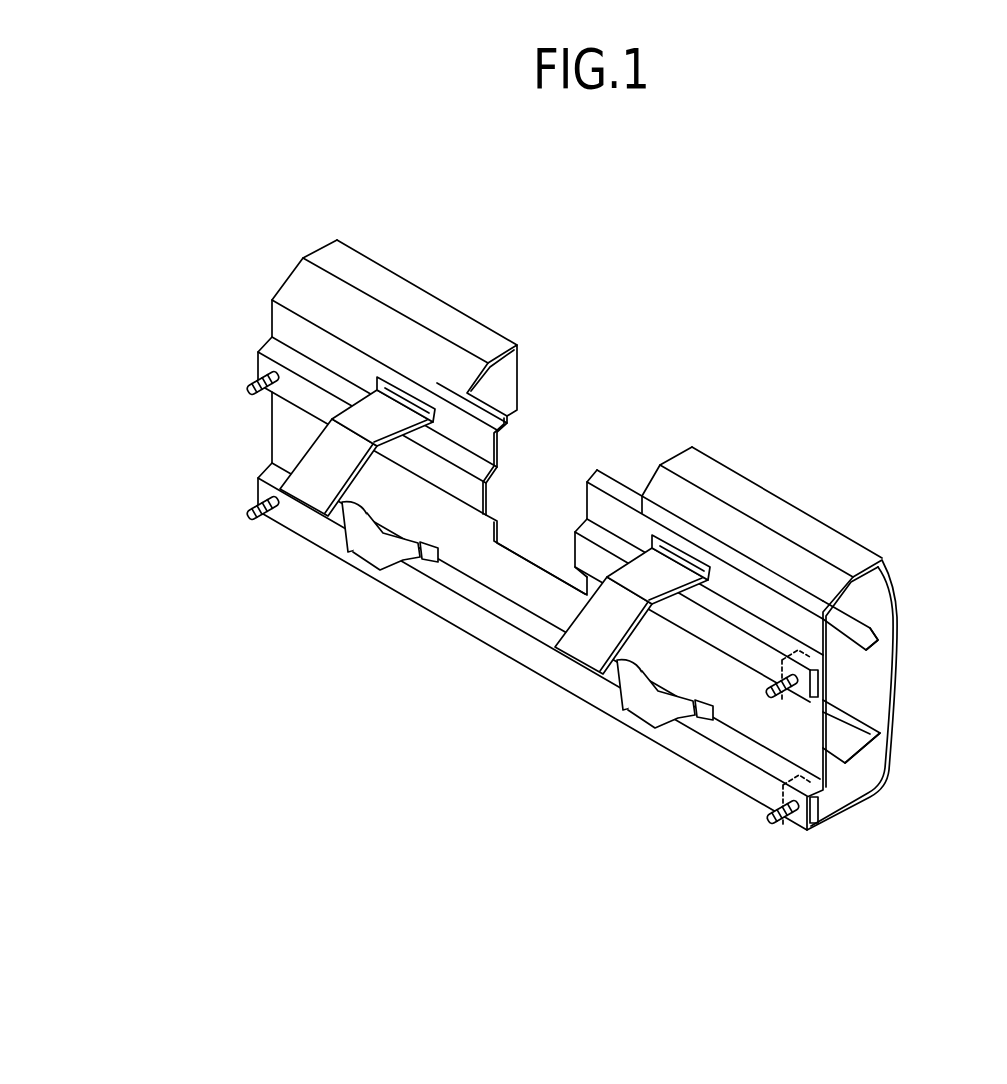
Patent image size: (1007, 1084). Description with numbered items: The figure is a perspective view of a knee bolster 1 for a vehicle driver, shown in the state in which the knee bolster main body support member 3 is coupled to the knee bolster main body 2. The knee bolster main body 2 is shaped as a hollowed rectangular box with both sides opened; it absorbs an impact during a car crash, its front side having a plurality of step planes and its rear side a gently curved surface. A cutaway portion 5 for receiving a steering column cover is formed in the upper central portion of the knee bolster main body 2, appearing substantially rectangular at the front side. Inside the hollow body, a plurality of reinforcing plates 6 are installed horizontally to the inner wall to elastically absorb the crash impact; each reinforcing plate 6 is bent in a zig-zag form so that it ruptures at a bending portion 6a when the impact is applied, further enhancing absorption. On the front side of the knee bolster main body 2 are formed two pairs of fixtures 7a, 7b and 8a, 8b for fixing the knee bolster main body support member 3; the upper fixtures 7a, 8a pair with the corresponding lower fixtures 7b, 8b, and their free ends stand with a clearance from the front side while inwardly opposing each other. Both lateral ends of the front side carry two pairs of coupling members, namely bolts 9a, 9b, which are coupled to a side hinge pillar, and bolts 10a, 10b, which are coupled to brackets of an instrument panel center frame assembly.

The knee bolster 1 is at (866, 494).
The knee bolster main body 2 is at (827, 577).
The knee bolster main body support member 3 is at (320, 456).
The cutaway portion 5 is at (547, 547).
The reinforcing plate 6 is at (515, 422).
The bending portion 6a is at (888, 637).
The upper fixture 7a is at (700, 545).
The lower fixture 7b is at (712, 720).
The upper fixture 8a is at (407, 393).
The lower fixture 8b is at (428, 553).
The bolt 9a is at (767, 697).
The bolt 9b is at (768, 818).
The bolt 10a is at (250, 387).
The bolt 10b is at (256, 512).